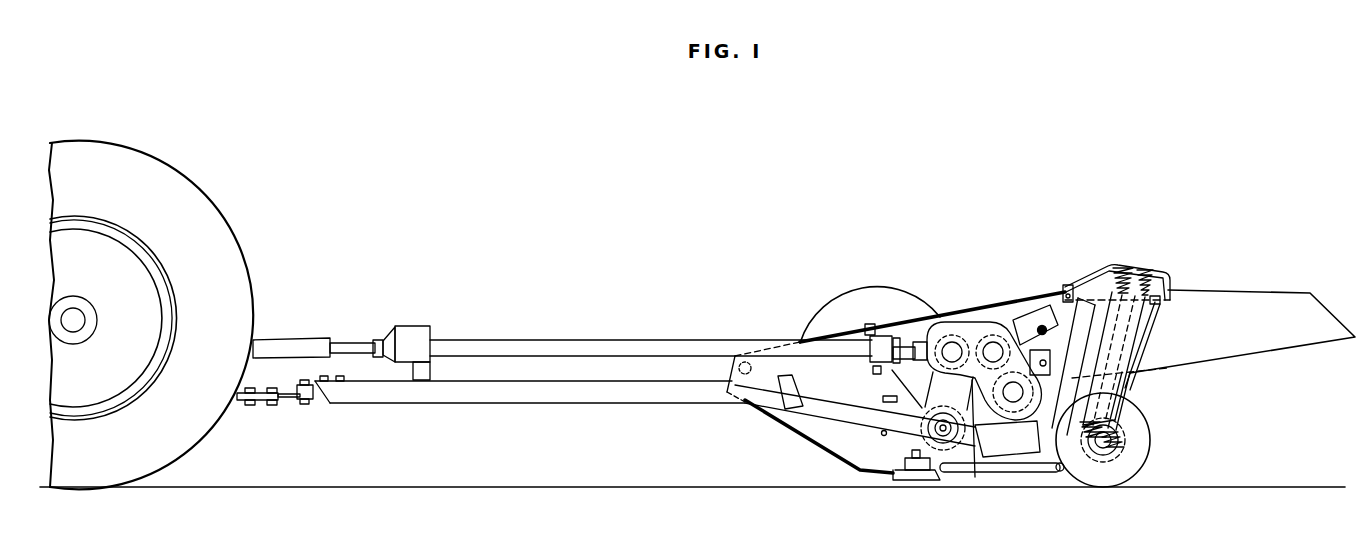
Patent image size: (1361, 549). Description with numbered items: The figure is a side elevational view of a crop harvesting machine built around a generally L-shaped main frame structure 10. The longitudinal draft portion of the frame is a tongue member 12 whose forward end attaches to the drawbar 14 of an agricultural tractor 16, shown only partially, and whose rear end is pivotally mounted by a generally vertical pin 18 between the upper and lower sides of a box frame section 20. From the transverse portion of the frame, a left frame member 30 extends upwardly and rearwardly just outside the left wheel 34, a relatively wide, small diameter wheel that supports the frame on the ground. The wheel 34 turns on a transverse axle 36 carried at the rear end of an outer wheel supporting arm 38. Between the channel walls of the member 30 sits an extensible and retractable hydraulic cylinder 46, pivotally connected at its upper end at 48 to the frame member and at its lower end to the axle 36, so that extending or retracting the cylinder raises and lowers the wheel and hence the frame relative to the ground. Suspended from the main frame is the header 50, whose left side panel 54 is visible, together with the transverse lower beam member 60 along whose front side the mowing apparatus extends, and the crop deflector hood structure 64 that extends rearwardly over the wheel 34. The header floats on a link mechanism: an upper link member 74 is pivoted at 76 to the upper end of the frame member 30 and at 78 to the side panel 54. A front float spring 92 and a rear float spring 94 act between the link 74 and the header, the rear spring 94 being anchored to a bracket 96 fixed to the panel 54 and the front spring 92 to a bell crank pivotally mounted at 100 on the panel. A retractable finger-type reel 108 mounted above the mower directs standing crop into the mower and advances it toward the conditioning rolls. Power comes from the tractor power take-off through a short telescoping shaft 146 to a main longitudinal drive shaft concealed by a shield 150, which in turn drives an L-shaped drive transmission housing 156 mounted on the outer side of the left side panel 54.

The main frame structure 10 is at (713, 424).
The tongue member 12 is at (526, 397).
The drawbar 14 is at (263, 405).
The agricultural tractor 16 is at (214, 183).
The vertical pin 18 is at (882, 434).
The box frame section 20 is at (822, 412).
The left frame member 30 is at (1143, 381).
The left wheel 34 is at (1130, 465).
The wheel axle 36 is at (1126, 440).
The outer wheel supporting arm 38 is at (1050, 460).
The hydraulic cylinder 46 is at (1140, 410).
The cylinder upper pivot connection 48 is at (1150, 322).
The header 50 is at (1024, 273).
The left side panel 54 is at (808, 375).
The lower beam member 60 is at (941, 476).
The crop deflector hood structure 64 is at (1240, 291).
The upper link member 74 is at (1102, 267).
The upper link pivot 76 is at (1161, 301).
The upper link header pivot 78 is at (1068, 292).
The front float spring 92 is at (1124, 265).
The rear float spring 94 is at (1147, 277).
The bracket 96 is at (1098, 455).
The bell crank pivot 100 is at (1008, 472).
The finger-type reel 108 is at (870, 284).
The telescoping shaft 146 is at (300, 340).
The shield 150 is at (612, 340).
The drive transmission housing 156 is at (993, 308).